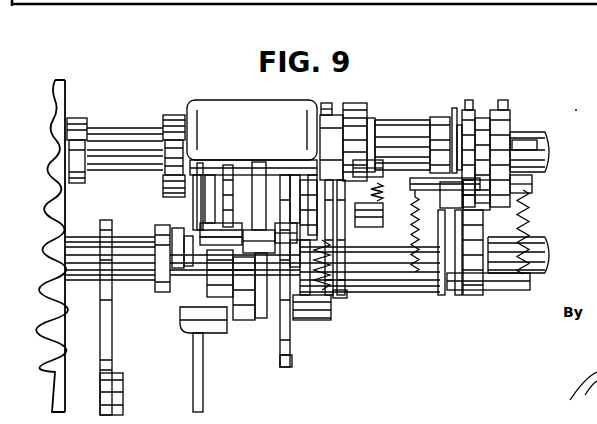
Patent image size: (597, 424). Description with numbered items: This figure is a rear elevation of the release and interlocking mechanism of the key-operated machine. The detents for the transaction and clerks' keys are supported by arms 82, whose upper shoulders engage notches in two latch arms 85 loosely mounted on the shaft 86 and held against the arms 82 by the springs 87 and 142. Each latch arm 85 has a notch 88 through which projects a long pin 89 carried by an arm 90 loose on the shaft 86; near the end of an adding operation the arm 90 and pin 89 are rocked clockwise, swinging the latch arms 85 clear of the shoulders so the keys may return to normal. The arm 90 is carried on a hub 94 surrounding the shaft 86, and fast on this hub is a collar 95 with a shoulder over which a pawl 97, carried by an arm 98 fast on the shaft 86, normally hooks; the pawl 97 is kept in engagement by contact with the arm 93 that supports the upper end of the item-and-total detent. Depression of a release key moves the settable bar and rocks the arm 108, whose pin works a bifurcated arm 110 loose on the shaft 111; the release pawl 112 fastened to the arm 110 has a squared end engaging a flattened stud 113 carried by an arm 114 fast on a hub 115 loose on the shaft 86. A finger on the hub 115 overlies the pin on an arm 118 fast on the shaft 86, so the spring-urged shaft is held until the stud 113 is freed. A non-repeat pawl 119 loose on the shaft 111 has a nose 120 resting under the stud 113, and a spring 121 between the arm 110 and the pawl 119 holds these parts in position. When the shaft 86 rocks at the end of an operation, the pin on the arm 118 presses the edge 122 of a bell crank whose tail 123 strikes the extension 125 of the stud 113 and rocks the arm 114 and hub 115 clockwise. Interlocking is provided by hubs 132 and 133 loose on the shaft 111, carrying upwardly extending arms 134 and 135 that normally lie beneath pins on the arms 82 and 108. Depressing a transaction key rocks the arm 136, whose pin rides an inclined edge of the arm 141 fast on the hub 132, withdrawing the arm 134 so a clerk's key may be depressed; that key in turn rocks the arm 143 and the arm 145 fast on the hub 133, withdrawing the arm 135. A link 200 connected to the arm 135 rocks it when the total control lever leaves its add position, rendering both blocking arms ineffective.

The arm 82 is at (470, 110).
The latch arm 85 is at (485, 122).
The shaft 86 is at (530, 135).
The spring 87 is at (412, 252).
The notch 88 is at (584, 103).
The long pin 89 is at (490, 203).
The arm 90 is at (440, 115).
The arm 93 is at (366, 103).
The hub 94 is at (395, 122).
The collar 95 is at (370, 122).
The pawl 97 is at (375, 198).
The arm 98 is at (352, 143).
The arm 108 is at (330, 103).
The bifurcated arm 110 is at (283, 255).
The shaft 111 is at (540, 247).
The release pawl 112 is at (303, 263).
The flattened stud 113 is at (283, 227).
The arm 114 is at (258, 168).
The hub 115 is at (200, 170).
The arm 118 is at (173, 118).
The non-repeat pawl 119 is at (290, 357).
The nose 120 is at (286, 255).
The spring 121 is at (325, 258).
The edge 122 is at (230, 195).
The tail 123 is at (232, 297).
The extension 125 is at (215, 225).
The hub 132 is at (478, 292).
The hub 133 is at (387, 290).
The arm 134 is at (457, 295).
The arm 135 is at (338, 300).
The arm 136 is at (530, 140).
The arm 141 is at (483, 290).
The spring 142 is at (527, 222).
The arm 143 is at (454, 170).
The arm 145 is at (442, 295).
The link 200 is at (340, 297).